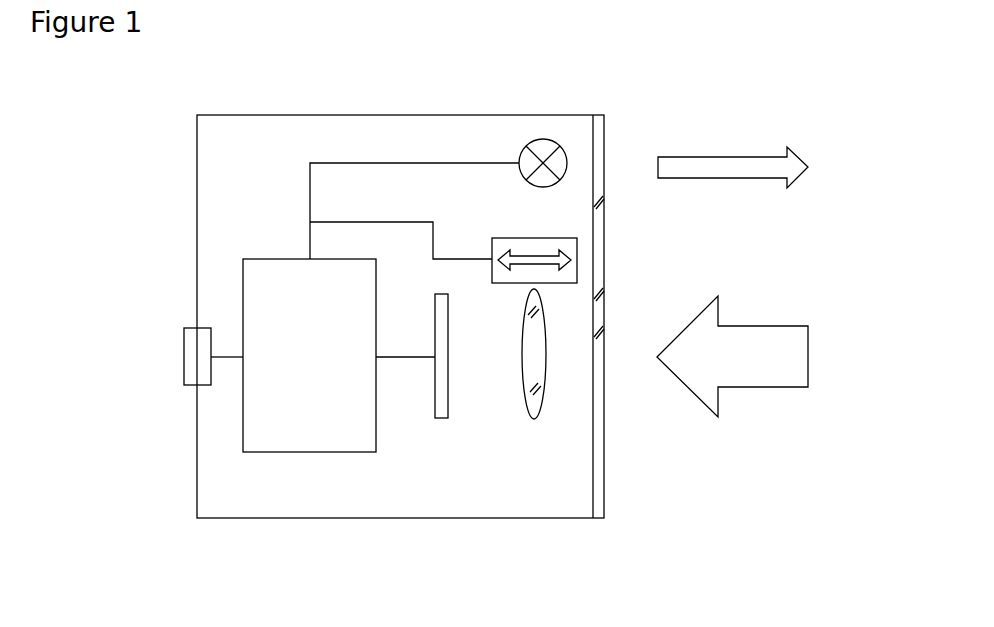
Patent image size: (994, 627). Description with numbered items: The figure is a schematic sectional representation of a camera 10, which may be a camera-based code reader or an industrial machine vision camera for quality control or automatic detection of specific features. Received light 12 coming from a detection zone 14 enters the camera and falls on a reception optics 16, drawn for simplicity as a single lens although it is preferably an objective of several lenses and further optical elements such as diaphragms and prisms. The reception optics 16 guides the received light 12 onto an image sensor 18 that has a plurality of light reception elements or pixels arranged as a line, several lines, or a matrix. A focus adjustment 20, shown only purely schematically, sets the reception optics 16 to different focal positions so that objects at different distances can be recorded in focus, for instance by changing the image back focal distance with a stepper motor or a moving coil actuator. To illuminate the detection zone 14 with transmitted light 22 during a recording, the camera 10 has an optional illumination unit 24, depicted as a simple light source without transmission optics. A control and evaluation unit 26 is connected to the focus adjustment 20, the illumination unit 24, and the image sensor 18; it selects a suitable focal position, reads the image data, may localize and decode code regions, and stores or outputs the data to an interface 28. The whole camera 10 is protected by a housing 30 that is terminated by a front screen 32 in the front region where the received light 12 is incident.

The camera 10 is at (613, 92).
The received light 12 is at (752, 367).
The detection zone 14 is at (920, 133).
The reception optics 16 is at (528, 350).
The image sensor 18 is at (448, 365).
The focus adjustment 20 is at (520, 240).
The transmitted light 22 is at (700, 160).
The illumination unit 24 is at (540, 160).
The control and evaluation unit 26 is at (275, 298).
The interface 28 is at (195, 357).
The housing 30 is at (465, 518).
The front screen 32 is at (604, 252).